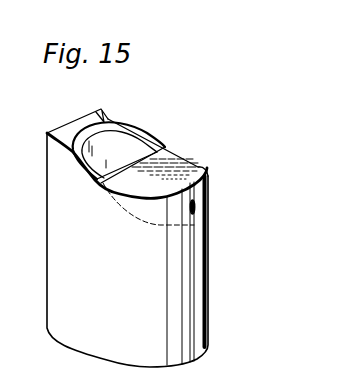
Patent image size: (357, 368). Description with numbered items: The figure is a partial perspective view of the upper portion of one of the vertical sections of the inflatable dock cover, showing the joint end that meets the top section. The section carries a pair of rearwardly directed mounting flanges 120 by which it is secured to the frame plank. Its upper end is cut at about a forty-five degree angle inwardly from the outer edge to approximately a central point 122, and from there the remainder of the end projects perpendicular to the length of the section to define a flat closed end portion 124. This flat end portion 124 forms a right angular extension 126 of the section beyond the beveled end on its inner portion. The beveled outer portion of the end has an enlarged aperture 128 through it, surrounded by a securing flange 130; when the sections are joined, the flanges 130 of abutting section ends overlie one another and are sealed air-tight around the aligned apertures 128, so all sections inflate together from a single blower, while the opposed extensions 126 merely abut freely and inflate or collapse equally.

The mounting flange 120 is at (96, 112).
The central point 122 is at (141, 152).
The flat end portion 124 is at (186, 172).
The right angular extension 126 is at (197, 211).
The enlarged aperture 128 is at (127, 128).
The securing flange 130 is at (83, 173).